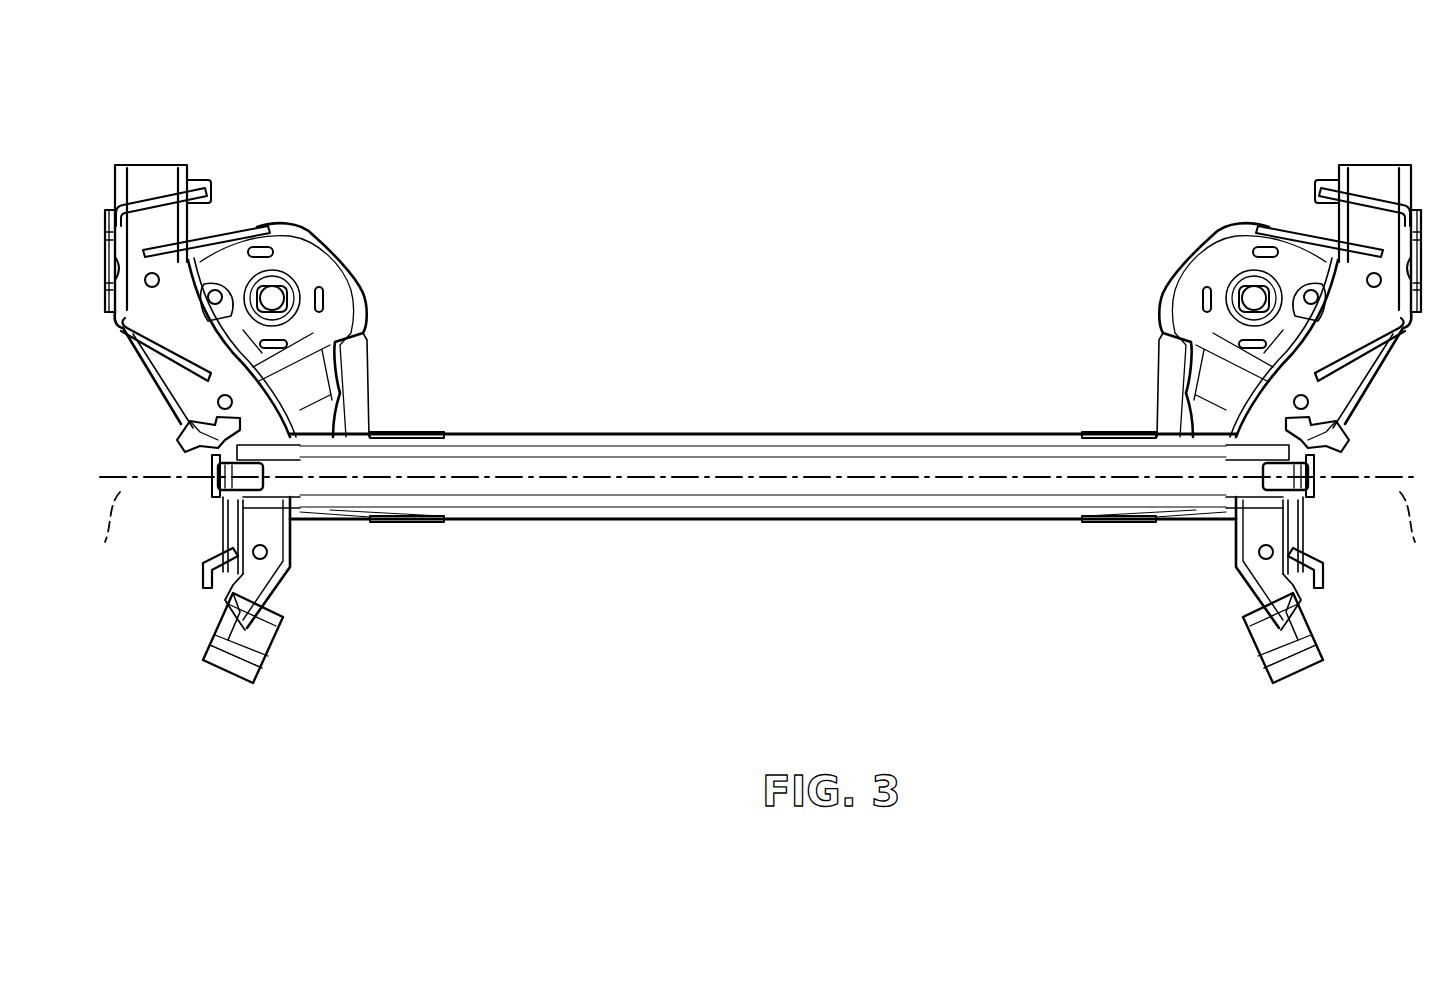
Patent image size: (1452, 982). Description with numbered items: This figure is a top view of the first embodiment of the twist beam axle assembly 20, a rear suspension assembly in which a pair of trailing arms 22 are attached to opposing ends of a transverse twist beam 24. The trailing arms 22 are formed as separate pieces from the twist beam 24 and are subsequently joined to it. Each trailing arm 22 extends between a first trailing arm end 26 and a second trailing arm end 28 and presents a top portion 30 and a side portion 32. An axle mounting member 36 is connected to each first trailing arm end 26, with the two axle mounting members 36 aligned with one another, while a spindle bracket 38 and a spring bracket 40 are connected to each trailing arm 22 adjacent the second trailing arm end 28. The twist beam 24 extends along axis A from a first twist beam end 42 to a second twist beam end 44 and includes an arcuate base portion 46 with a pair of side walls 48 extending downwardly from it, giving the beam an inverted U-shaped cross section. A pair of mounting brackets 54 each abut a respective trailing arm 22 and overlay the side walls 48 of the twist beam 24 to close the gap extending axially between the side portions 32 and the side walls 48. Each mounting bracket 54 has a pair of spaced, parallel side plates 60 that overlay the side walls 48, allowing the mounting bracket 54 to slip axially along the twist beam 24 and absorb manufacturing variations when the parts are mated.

The twist beam axle assembly 20 is at (718, 257).
The trailing arm 22 is at (153, 393).
The twist beam 24 is at (1063, 432).
The first trailing arm end 26 is at (247, 632).
The second trailing arm end 28 is at (147, 166).
The top portion 30 is at (247, 548).
The side portion 32 is at (295, 540).
The axle mounting member 36 is at (231, 665).
The spindle bracket 38 is at (112, 207).
The spring bracket 40 is at (257, 226).
The first twist beam end 42 is at (1283, 505).
The second twist beam end 44 is at (243, 505).
The base portion 46 is at (910, 467).
The side wall 48 is at (680, 432).
The mounting bracket 54 is at (412, 522).
The side plate 60 is at (400, 430).